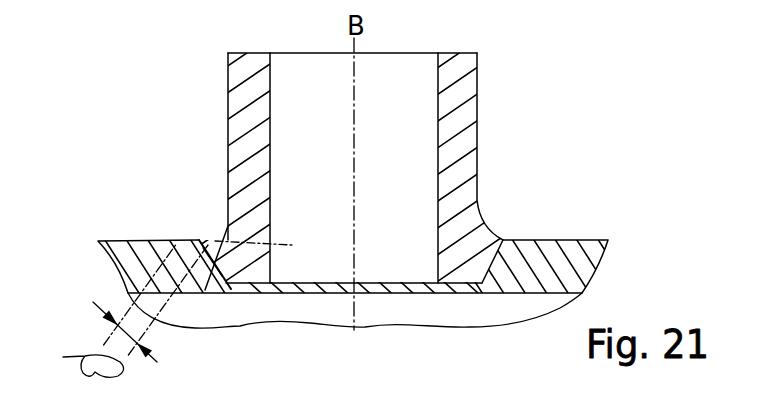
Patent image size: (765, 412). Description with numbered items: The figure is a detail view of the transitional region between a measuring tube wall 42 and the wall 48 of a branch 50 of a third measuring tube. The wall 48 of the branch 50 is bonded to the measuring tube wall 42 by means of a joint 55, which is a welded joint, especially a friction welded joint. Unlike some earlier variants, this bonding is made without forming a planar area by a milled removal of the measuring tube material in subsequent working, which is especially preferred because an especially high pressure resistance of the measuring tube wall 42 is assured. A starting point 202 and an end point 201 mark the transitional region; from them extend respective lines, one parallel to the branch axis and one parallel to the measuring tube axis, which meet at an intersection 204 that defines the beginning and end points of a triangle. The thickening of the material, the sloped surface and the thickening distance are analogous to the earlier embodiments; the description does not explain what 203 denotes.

The measuring tube wall 42 is at (122, 265).
The wall 48 is at (321, 169).
The branch 50 is at (462, 98).
The joint 55 is at (244, 290).
The end point 201 is at (200, 240).
The starting point 202 is at (226, 222).
The groove width 203 is at (207, 238).
The intersection 204 is at (291, 246).